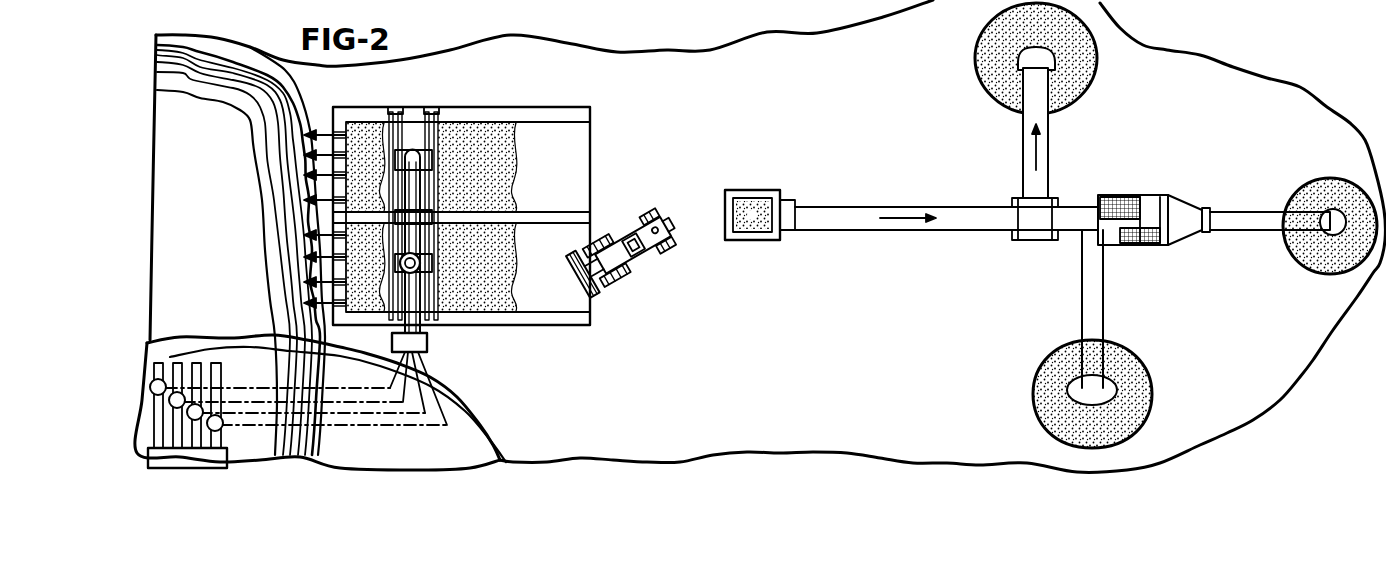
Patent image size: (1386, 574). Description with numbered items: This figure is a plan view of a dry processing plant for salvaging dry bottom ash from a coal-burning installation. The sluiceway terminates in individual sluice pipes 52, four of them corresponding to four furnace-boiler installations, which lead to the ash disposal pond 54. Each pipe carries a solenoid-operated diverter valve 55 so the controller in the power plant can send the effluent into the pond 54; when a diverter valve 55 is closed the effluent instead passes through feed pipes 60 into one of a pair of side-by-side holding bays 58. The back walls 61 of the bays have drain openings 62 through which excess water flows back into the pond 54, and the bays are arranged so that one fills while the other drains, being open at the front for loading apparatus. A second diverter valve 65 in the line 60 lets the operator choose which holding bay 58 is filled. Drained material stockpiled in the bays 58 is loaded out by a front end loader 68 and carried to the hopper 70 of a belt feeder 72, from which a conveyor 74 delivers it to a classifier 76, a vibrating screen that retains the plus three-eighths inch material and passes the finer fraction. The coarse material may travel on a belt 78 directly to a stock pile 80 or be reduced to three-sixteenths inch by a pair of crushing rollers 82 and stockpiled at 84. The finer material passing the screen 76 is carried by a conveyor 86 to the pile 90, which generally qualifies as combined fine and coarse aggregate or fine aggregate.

The sluice pipe 52 is at (232, 433).
The ash disposal pond 54 is at (216, 285).
The solenoid-operated diverter valve 55 is at (218, 421).
The holding bay 58 is at (572, 152).
The feed pipe 60 is at (362, 432).
The back wall 61 is at (335, 216).
The drain opening 62 is at (312, 170).
The second diverter valve 65 is at (421, 263).
The front end loader 68 is at (642, 212).
The hopper 70 is at (755, 190).
The belt feeder 72 is at (800, 228).
The conveyor 74 is at (830, 213).
The classifier 76 is at (1152, 206).
The belt 78 is at (1098, 296).
The stock pile 80 is at (1052, 375).
The crushing rollers 82 is at (1014, 199).
The stock pile 84 is at (1000, 46).
The conveyor 86 is at (1243, 218).
The pile 90 is at (1316, 190).